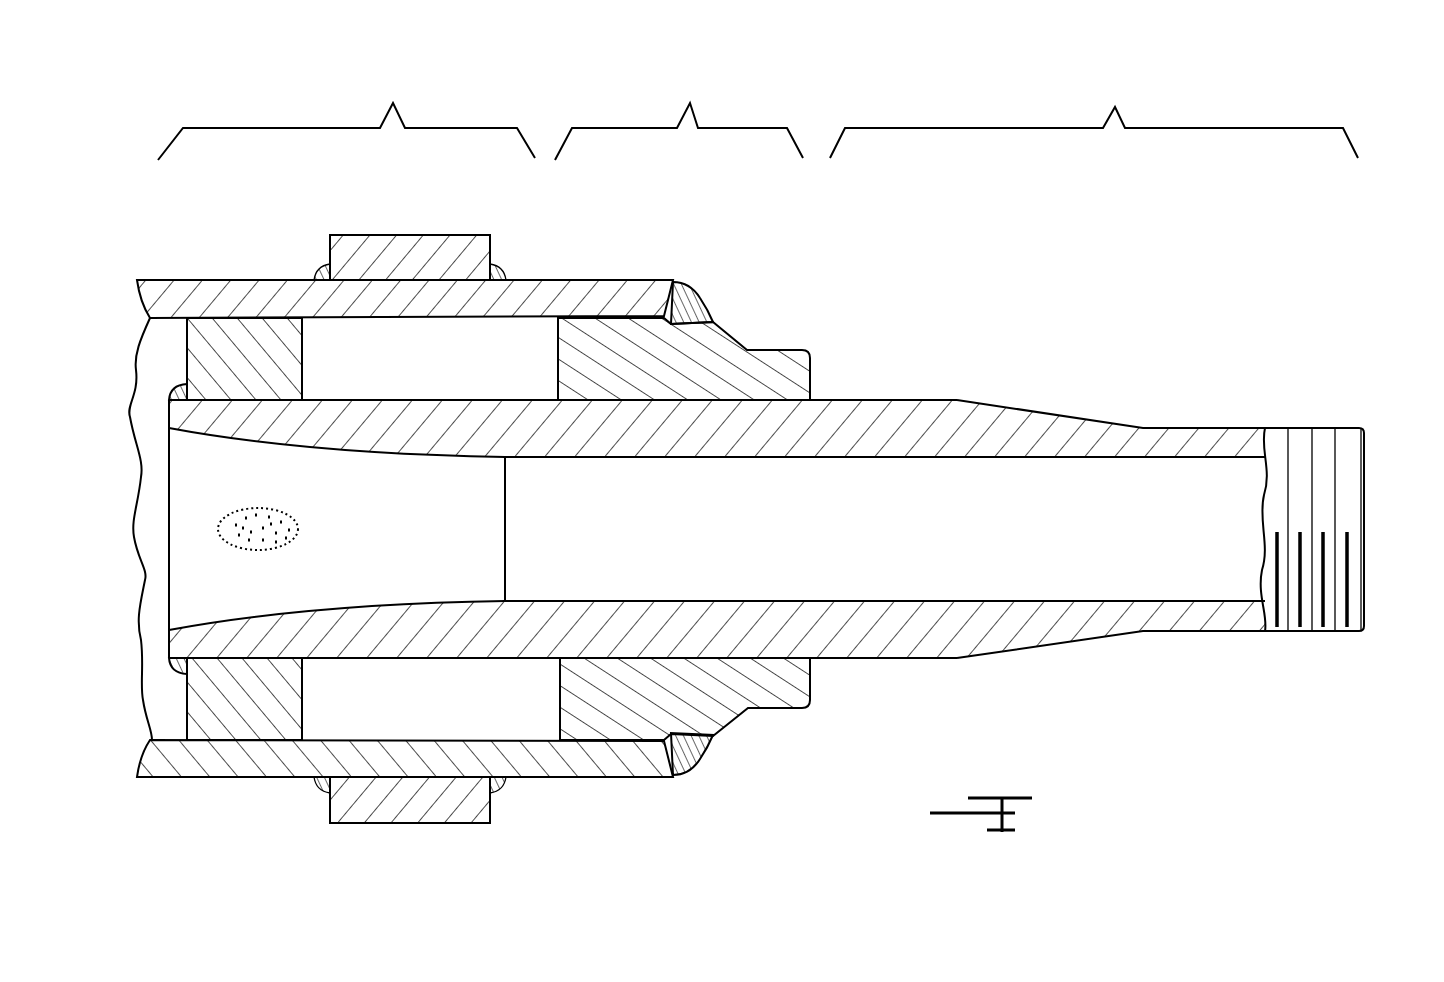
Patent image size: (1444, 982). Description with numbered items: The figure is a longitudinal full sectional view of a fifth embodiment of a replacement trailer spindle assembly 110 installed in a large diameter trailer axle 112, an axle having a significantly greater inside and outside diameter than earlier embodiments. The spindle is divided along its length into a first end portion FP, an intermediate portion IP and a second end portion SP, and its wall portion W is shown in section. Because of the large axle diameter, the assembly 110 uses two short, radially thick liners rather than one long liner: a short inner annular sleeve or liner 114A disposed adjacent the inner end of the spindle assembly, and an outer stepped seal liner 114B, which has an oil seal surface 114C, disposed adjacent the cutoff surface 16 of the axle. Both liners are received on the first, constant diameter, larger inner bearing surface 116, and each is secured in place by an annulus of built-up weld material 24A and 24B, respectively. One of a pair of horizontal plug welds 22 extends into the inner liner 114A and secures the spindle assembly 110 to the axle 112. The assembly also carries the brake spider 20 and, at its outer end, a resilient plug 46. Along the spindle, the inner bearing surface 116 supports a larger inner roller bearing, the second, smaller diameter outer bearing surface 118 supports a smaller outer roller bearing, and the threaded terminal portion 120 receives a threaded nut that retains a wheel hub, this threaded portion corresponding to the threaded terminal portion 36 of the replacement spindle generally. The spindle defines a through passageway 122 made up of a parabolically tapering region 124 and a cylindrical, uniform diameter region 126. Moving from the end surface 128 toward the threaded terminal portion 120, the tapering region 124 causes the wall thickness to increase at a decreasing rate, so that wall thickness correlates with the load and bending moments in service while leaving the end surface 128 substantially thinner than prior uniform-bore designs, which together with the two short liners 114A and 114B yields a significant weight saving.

The replacement trailer spindle assembly 110 is at (1047, 389).
The first, larger diameter inner bearing surface 116 is at (863, 400).
The second, smaller diameter outer bearing surface 118 is at (1200, 427).
The threaded terminal portion 120 is at (1298, 437).
The cylindrical region 126 is at (880, 465).
The parabolically tapering region 124 is at (242, 440).
The end surface 128 is at (165, 643).
The through passageway 122 is at (748, 514).
The threaded terminal portion 36 is at (1305, 632).
The resilient plug 46 is at (1368, 544).
The axle 112 is at (523, 296).
The brake spider 20 is at (402, 235).
The short inner annular sleeve or liner 114A is at (218, 345).
The outer stepped seal liner 114B is at (763, 692).
The oil seal surface 114C is at (788, 350).
The annulus of built-up weld material 24A is at (703, 304).
The cutoff surface 16 is at (675, 287).
The annulus of built-up weld material 24B is at (175, 395).
The horizontal plug weld 22 is at (243, 530).
The wall portion W is at (552, 628).
The second end portion SP is at (346, 114).
The intermediate portion IP is at (679, 114).
The first end portion FP is at (1094, 115).